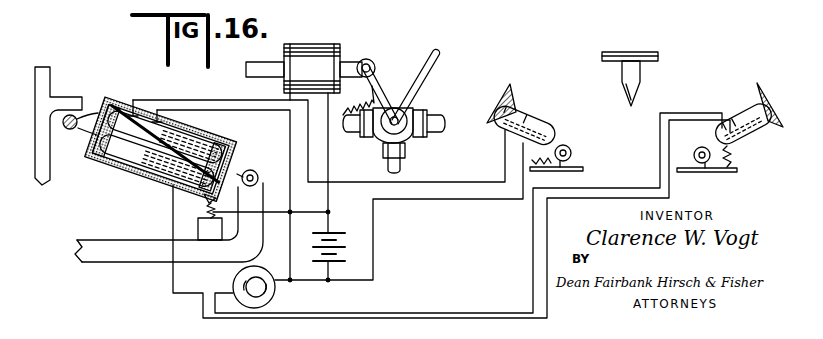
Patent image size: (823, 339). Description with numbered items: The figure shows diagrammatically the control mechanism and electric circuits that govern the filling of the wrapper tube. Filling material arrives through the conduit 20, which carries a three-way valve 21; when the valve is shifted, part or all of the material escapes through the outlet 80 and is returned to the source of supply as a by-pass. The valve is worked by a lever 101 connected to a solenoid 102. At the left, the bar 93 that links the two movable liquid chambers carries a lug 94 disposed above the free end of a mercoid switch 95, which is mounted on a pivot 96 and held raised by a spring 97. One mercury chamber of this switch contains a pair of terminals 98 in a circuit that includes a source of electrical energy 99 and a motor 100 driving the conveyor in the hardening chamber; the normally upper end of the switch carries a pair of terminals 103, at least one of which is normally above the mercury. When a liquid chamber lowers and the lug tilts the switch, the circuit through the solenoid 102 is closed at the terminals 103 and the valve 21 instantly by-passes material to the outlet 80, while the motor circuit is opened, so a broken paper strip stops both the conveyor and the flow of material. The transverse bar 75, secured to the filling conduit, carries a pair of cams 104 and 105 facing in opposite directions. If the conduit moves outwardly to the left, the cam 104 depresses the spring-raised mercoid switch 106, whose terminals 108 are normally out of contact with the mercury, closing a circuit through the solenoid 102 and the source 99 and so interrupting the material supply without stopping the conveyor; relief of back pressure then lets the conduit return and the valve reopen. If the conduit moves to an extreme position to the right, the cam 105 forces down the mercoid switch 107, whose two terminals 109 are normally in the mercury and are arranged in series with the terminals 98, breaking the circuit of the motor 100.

The bar 93 is at (42, 63).
The lug 94 is at (68, 97).
The mercoid switch 95 is at (118, 170).
The pivot 96 is at (253, 170).
The spring 97 is at (198, 228).
The terminals 98 is at (175, 186).
The source of electrical energy 99 is at (340, 231).
The motor 100 is at (276, 292).
The lever 101 is at (383, 80).
The solenoid 102 is at (308, 48).
The terminals 103 is at (148, 108).
The cam 104 is at (620, 89).
The cam 105 is at (640, 94).
The mercoid switch 106 is at (512, 85).
The mercoid switch 107 is at (751, 90).
The terminals 108 is at (514, 124).
The terminals 109 is at (742, 122).
The conduit 20 is at (436, 119).
The three-way valve 21 is at (407, 110).
The transverse bar 75 is at (615, 52).
The outlet 80 is at (398, 166).